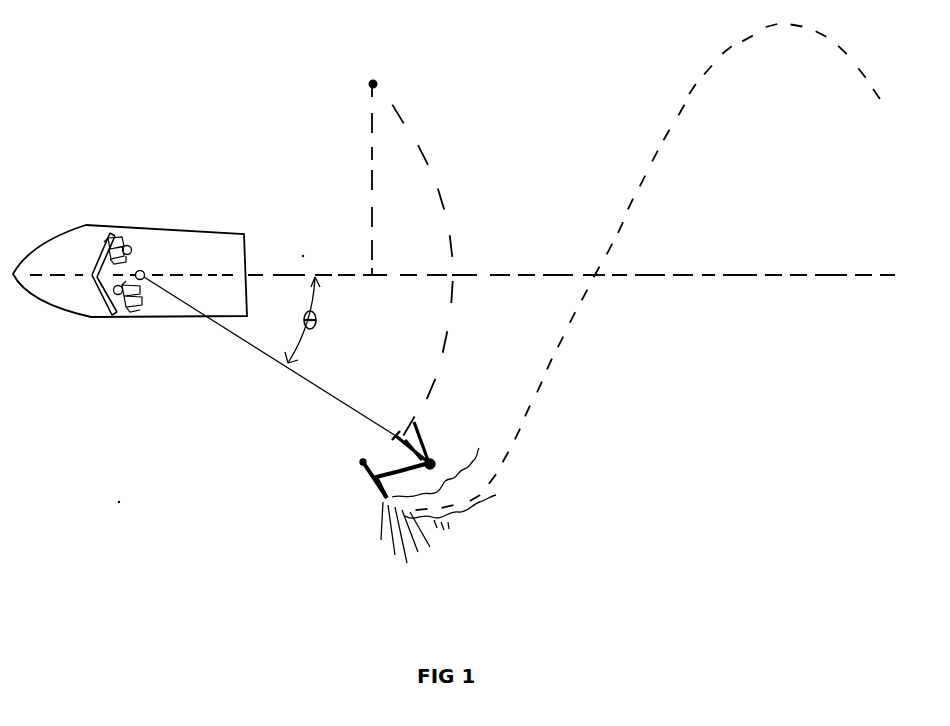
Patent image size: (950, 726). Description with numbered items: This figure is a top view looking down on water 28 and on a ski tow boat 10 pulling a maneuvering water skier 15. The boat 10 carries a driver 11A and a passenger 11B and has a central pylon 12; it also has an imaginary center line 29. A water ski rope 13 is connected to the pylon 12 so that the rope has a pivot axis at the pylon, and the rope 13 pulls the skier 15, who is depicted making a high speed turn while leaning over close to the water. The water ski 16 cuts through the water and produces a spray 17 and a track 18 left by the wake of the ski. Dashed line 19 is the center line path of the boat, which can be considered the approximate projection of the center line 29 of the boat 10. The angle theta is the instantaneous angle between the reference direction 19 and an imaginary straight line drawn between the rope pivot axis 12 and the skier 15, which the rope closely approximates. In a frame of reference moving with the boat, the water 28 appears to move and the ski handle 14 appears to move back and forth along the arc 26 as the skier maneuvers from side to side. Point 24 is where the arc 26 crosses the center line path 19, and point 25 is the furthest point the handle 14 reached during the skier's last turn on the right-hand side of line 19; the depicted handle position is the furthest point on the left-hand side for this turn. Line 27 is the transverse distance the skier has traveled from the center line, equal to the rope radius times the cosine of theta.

The ski tow boat 10 is at (90, 225).
The driver 11A is at (129, 232).
The passenger 11B is at (126, 318).
The central pylon 12 is at (150, 267).
The water ski rope 13 is at (250, 349).
The ski handle 14 is at (396, 431).
The water skier 15 is at (432, 464).
The water ski 16 is at (364, 471).
The spray 17 is at (445, 539).
The track 18 is at (543, 382).
The center line path of the boat 19 is at (534, 275).
The crossing point 24 is at (435, 275).
The furthest handle point 25 is at (373, 82).
The arc 26 is at (409, 125).
The transverse distance line 27 is at (372, 182).
The water 28 is at (787, 403).
The center line 29 is at (50, 280).